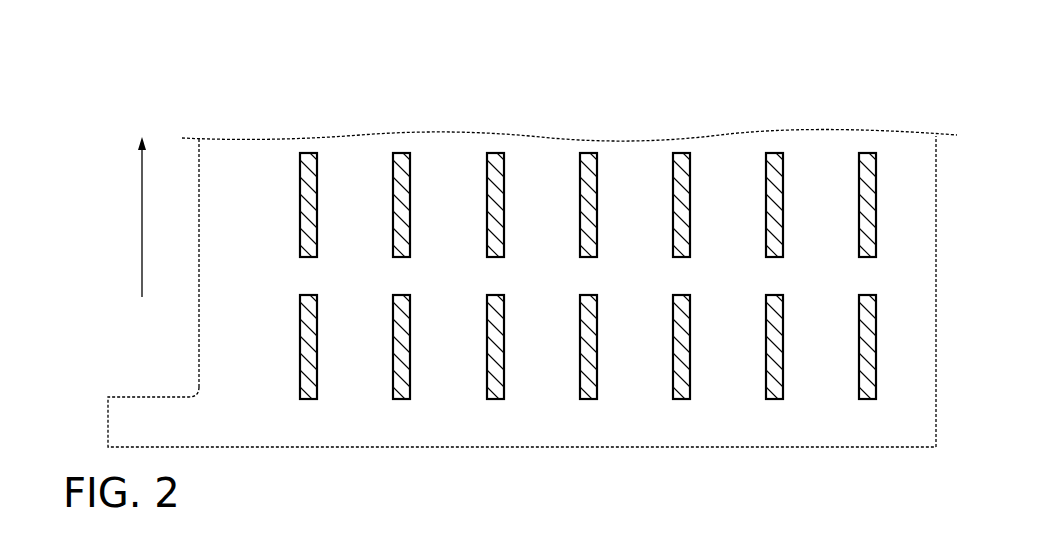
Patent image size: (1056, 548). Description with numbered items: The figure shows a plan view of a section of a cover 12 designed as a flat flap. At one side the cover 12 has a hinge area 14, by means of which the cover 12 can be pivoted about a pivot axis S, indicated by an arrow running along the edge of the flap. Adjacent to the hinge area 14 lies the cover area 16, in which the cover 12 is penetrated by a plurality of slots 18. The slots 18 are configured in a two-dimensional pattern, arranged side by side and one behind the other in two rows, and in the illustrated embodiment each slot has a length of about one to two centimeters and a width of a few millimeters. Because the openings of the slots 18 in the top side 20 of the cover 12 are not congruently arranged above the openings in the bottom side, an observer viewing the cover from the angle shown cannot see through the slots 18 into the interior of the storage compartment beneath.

The cover 12 is at (955, 215).
The hinge area 14 is at (155, 420).
The cover area 16 is at (775, 277).
The slots 18 is at (493, 325).
The top side 20 is at (912, 270).
The pivot axis S is at (142, 238).